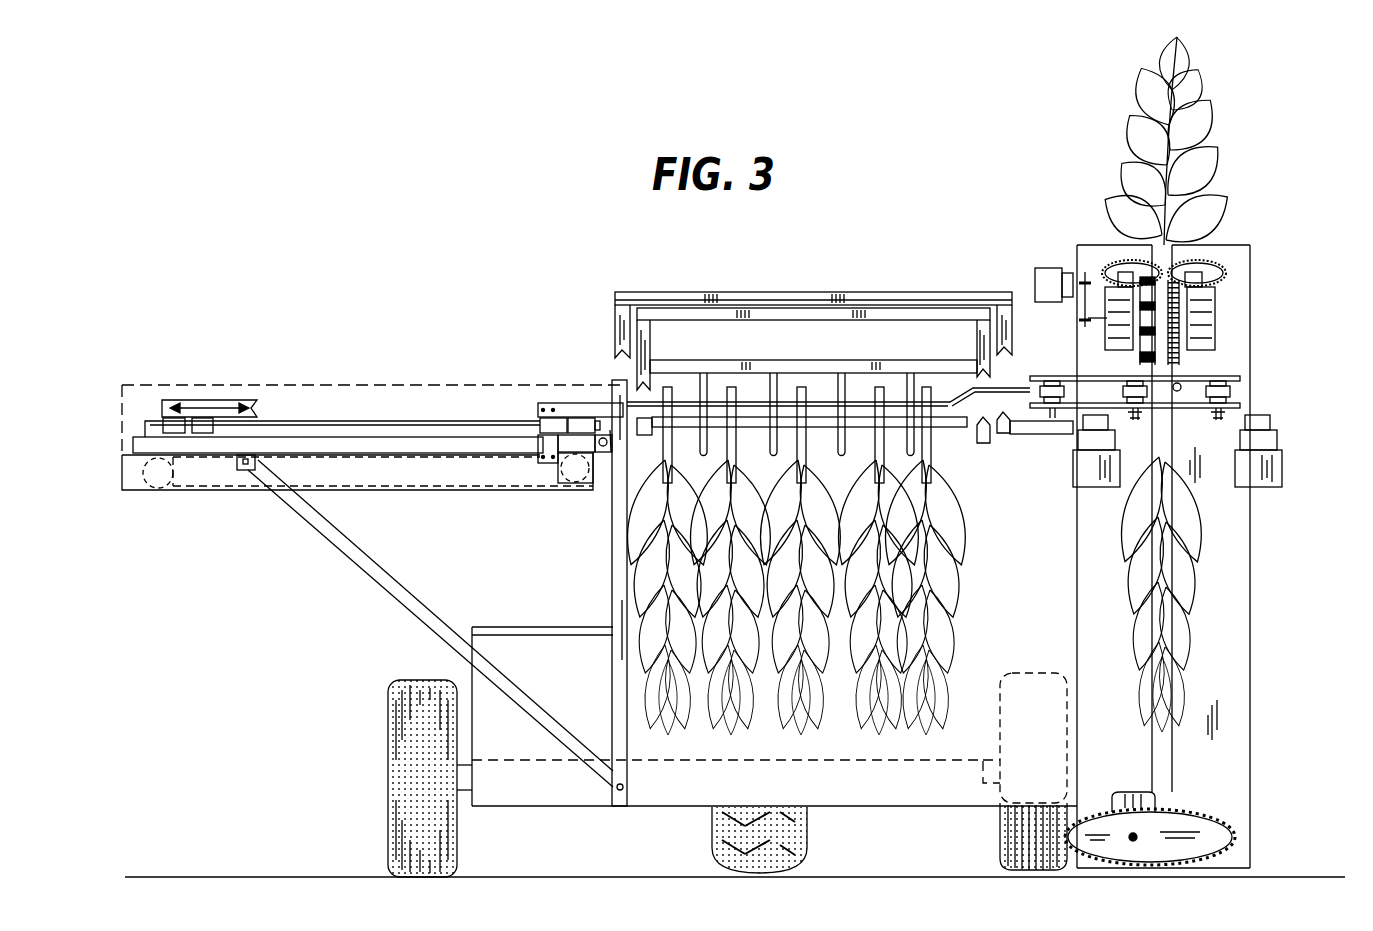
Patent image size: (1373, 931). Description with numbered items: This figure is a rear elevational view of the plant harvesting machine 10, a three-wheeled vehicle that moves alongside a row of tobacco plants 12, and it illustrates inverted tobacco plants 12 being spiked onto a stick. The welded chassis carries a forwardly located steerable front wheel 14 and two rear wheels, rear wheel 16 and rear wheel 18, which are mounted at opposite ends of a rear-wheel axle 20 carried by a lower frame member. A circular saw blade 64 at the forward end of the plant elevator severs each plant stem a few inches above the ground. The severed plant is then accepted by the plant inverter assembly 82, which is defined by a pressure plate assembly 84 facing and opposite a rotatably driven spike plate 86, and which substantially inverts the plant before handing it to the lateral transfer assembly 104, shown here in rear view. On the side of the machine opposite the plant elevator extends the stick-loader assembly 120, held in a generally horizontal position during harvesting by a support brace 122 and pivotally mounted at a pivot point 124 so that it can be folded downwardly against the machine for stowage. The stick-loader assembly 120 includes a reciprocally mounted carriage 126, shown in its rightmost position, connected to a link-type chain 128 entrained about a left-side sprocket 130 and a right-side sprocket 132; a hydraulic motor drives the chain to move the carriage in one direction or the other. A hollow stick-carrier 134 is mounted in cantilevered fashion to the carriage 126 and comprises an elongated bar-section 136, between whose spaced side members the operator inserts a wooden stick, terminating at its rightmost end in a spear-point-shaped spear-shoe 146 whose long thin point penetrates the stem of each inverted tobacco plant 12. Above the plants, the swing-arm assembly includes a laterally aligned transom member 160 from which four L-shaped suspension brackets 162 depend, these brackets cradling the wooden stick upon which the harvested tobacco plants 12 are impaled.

The plant harvesting machine 10 is at (410, 276).
The tobacco plant 12 is at (972, 553).
The steerable front wheel 14 is at (712, 845).
The rear wheel 16 is at (407, 682).
The rear wheel 18 is at (1000, 850).
The rear-wheel axle 20 is at (463, 783).
The circular saw blade 64 is at (1225, 848).
The plant inverter assembly 82 is at (1201, 313).
The pressure plate assembly 84 is at (1122, 364).
The spike plate 86 is at (1185, 366).
The lateral transfer assembly 104 is at (1268, 394).
The stick-loader assembly 120 is at (217, 341).
The support brace 122 is at (425, 598).
The pivot point 124 is at (604, 455).
The carriage 126 is at (160, 423).
The link-type chain 128 is at (395, 487).
The left-side sprocket 130 is at (160, 488).
The right-side sprocket 132 is at (570, 483).
The stick-carrier 134 is at (235, 395).
The elongated bar-section 136 is at (827, 402).
The spear-shoe 146 is at (1016, 380).
The transom member 160 is at (880, 313).
The suspension brackets 162 is at (918, 443).